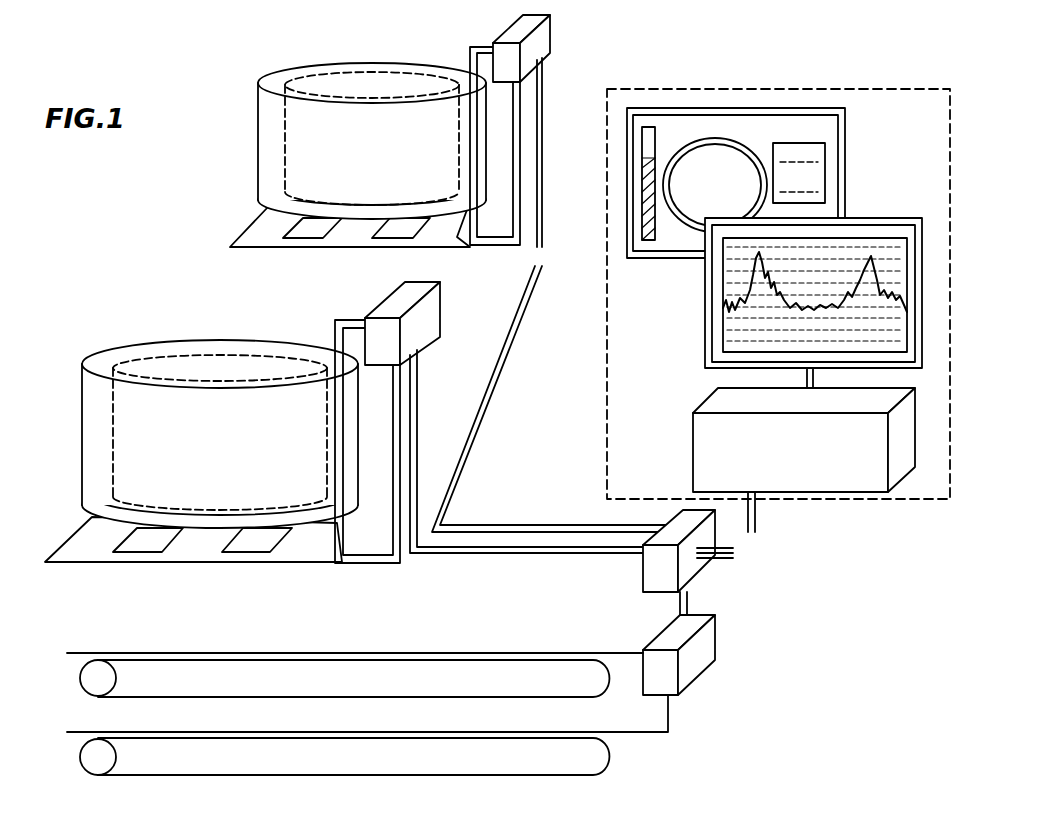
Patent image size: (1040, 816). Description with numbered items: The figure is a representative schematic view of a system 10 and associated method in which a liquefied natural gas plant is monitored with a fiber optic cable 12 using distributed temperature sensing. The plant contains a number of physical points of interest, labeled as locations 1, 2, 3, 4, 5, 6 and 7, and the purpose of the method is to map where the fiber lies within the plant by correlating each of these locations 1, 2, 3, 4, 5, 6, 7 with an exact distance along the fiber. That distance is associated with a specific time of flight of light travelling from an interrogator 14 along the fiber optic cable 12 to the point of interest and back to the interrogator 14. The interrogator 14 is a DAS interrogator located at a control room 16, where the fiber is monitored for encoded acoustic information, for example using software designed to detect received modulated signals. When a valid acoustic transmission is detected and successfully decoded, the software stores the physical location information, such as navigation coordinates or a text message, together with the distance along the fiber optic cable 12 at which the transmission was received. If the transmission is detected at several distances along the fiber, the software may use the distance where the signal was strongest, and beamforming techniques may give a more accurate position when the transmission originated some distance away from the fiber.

The location 1 is at (690, 651).
The location 2 is at (549, 295).
The location 3 is at (708, 570).
The location 4 is at (530, 130).
The location 5 is at (368, 422).
The location 6 is at (494, 462).
The location 7 is at (365, 690).
The system 10 is at (942, 66).
The fiber optic cable 12 is at (760, 512).
The interrogator 14 is at (693, 448).
The control room 16 is at (748, 89).